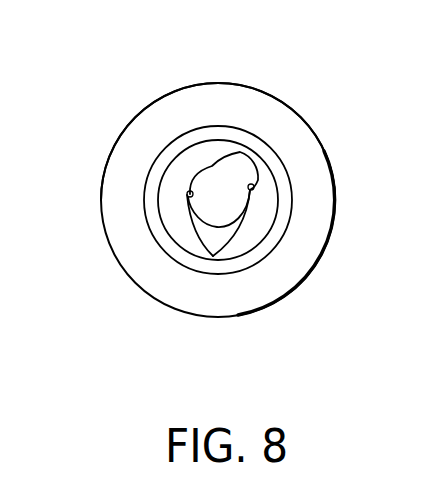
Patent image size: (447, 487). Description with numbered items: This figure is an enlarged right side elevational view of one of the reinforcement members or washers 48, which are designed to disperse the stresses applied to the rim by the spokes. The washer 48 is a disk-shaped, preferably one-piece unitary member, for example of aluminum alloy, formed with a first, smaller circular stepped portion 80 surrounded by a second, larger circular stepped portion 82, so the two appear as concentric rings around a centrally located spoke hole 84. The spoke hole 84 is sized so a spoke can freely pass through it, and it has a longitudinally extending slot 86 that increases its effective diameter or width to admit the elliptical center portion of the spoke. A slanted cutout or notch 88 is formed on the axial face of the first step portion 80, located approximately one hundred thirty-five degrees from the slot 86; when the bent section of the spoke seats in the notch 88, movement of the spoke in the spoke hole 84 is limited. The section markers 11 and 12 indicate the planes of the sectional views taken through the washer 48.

The reinforcement member or washer 48 is at (119, 107).
The second circular stepped portion 82 is at (317, 131).
The first circular stepped portion 80 is at (291, 177).
The spoke hole 84 is at (187, 195).
The longitudinally extending slot 86 is at (253, 189).
The slanted cutout or notch 88 is at (220, 242).
The section line 11- 11 is at (225, 83).
The section line 12- 12 is at (307, 120).